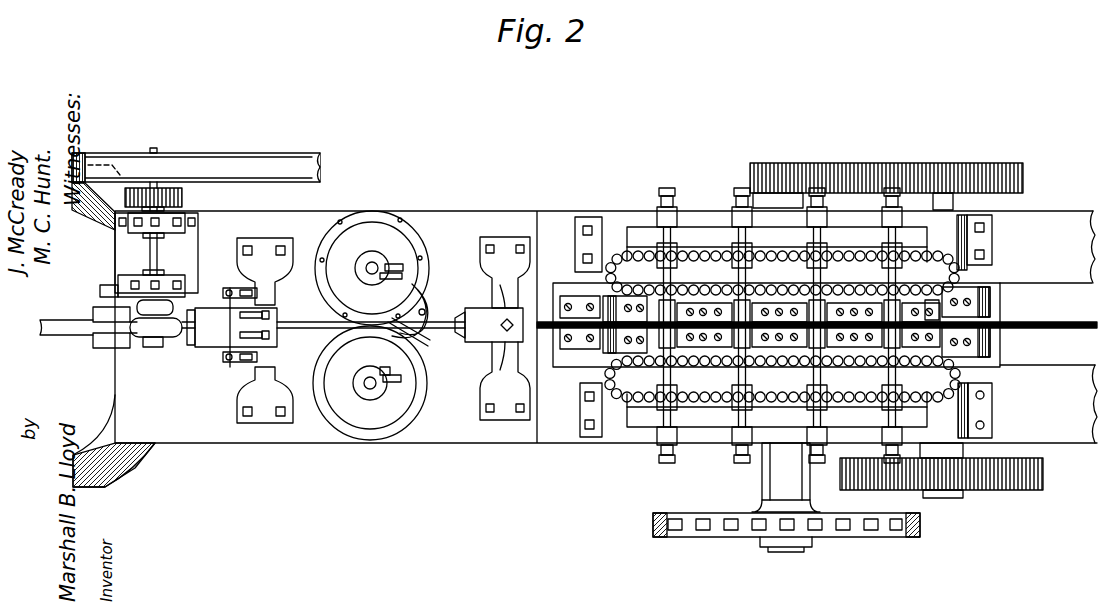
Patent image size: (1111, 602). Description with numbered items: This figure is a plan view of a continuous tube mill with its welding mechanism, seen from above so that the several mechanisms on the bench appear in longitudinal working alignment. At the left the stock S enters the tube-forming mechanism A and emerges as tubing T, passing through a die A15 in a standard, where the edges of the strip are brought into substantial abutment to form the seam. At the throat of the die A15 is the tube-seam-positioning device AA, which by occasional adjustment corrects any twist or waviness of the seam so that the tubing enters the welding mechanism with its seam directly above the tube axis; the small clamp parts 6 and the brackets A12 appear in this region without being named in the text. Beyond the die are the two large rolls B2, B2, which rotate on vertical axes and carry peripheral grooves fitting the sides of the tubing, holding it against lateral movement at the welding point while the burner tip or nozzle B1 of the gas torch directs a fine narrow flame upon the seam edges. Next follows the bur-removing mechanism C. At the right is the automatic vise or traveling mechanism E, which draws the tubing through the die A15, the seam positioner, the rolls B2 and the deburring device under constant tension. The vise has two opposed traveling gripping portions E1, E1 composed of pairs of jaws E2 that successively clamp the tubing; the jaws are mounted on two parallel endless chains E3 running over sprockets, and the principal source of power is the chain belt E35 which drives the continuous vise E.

The stock S is at (66, 335).
The tube-forming mechanism A is at (144, 341).
The tube-seam-positioning device AA is at (226, 363).
The die A15 is at (272, 322).
The clamp pins 6 is at (227, 288).
The bearing brackets A12 is at (237, 405).
The tubing T is at (315, 324).
The rolls B2 is at (400, 242).
The burner tip or nozzle B1 is at (393, 323).
The bur-removing mechanism C is at (492, 328).
The automatic vise or traveling mechanism E is at (809, 337).
The traveling gripping portions E1 is at (768, 306).
The jaws E2 is at (685, 306).
The endless chains E3 is at (963, 287).
The chain belt E35 is at (917, 529).